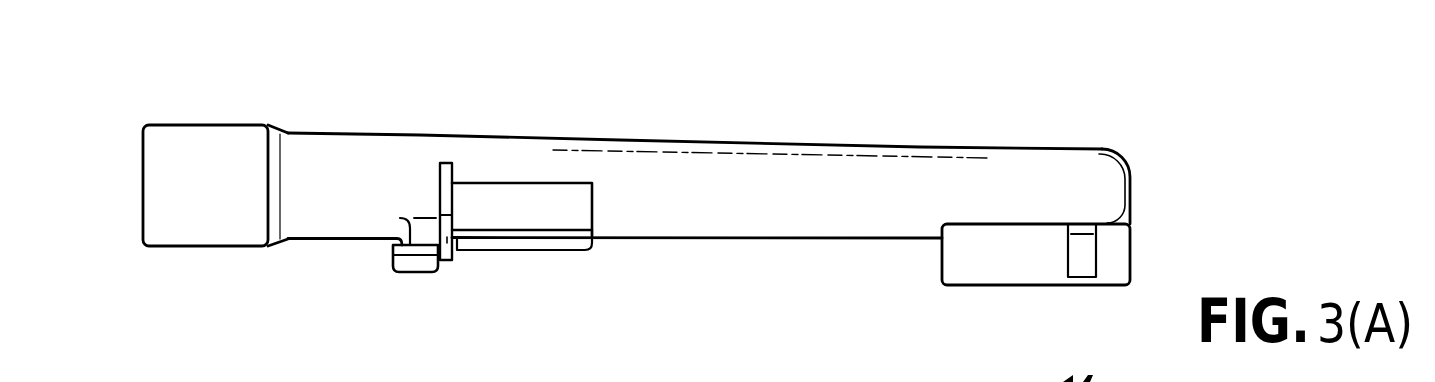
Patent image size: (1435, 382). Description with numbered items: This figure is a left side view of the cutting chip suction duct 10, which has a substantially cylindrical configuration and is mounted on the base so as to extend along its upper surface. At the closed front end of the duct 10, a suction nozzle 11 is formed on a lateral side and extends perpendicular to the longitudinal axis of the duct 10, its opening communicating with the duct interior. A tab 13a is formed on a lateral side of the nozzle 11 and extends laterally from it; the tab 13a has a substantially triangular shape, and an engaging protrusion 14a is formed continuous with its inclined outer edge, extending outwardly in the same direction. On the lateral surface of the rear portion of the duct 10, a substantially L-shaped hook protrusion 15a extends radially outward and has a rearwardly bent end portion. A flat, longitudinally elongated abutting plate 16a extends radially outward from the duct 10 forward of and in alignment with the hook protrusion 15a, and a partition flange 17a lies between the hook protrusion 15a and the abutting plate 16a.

The cutting chip suction duct 10 is at (680, 138).
The suction nozzle 11 is at (1002, 260).
The tab 13a is at (1085, 260).
The engaging protrusion 14a is at (1078, 223).
The hook protrusion 15a is at (422, 245).
The abutting plate 16a is at (550, 240).
The partition flange 17a is at (445, 262).